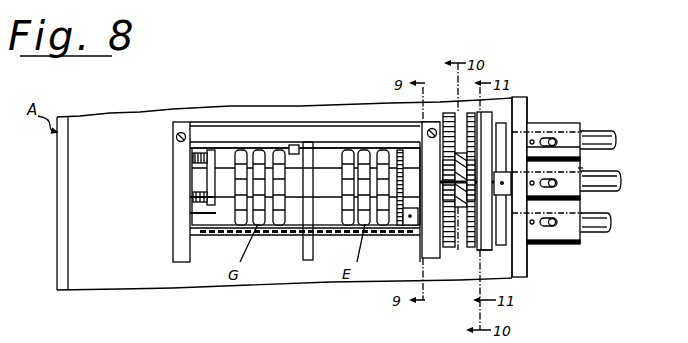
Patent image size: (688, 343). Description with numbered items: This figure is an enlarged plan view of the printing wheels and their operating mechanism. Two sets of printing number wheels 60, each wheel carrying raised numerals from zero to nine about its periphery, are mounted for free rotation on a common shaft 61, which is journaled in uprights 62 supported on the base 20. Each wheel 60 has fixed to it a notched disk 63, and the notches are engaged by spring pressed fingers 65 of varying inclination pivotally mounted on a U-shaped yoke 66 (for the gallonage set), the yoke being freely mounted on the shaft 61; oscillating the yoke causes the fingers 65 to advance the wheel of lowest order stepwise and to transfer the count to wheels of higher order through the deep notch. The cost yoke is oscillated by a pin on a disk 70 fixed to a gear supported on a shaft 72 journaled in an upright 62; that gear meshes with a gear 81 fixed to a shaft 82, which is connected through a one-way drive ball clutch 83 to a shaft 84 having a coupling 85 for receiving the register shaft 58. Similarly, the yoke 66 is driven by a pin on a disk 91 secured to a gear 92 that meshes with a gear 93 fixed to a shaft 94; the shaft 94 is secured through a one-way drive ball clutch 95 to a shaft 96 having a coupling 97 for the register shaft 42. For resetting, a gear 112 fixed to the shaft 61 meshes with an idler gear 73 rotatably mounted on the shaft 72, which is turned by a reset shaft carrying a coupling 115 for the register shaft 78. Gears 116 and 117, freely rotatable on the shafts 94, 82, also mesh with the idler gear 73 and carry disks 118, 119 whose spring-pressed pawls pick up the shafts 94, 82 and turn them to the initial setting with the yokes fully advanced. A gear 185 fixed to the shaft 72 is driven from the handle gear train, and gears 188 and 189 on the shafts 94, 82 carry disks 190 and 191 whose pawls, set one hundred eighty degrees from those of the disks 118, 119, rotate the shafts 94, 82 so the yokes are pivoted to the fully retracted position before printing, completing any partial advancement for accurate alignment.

The base 20 is at (60, 170).
The shaft 42 is at (592, 133).
The shaft 58 is at (612, 216).
The printing number wheel 60 is at (259, 152).
The shaft 61 is at (173, 180).
The upright 62 is at (173, 258).
The notched disk 63 is at (290, 150).
The spring pressed finger 65 is at (243, 150).
The U-shaped yoke 66 is at (207, 152).
The disk 70 is at (400, 214).
The shaft 72 is at (492, 180).
The idler gear 73 is at (482, 172).
The shaft 78 is at (622, 182).
The gear 81 is at (416, 244).
The shaft 82 is at (202, 236).
The one-way drive ball clutch 83 is at (516, 262).
The shaft 84 is at (540, 240).
The coupling 85 is at (578, 238).
The disk 91 is at (200, 213).
The gear 92 is at (196, 197).
The gear 93 is at (192, 153).
The shaft 94 is at (172, 140).
The one-way drive ball clutch 95 is at (500, 117).
The shaft 96 is at (534, 130).
The coupling 97 is at (557, 130).
The gear 112 is at (478, 181).
The coupling 115 is at (578, 168).
The gear 116 is at (471, 113).
The gear 117 is at (471, 250).
The disk 118 is at (483, 112).
The disk 119 is at (482, 255).
The gear 185 is at (506, 184).
The gear 188 is at (450, 113).
The gear 189 is at (447, 250).
The disk 190 is at (422, 128).
The disk 191 is at (425, 250).